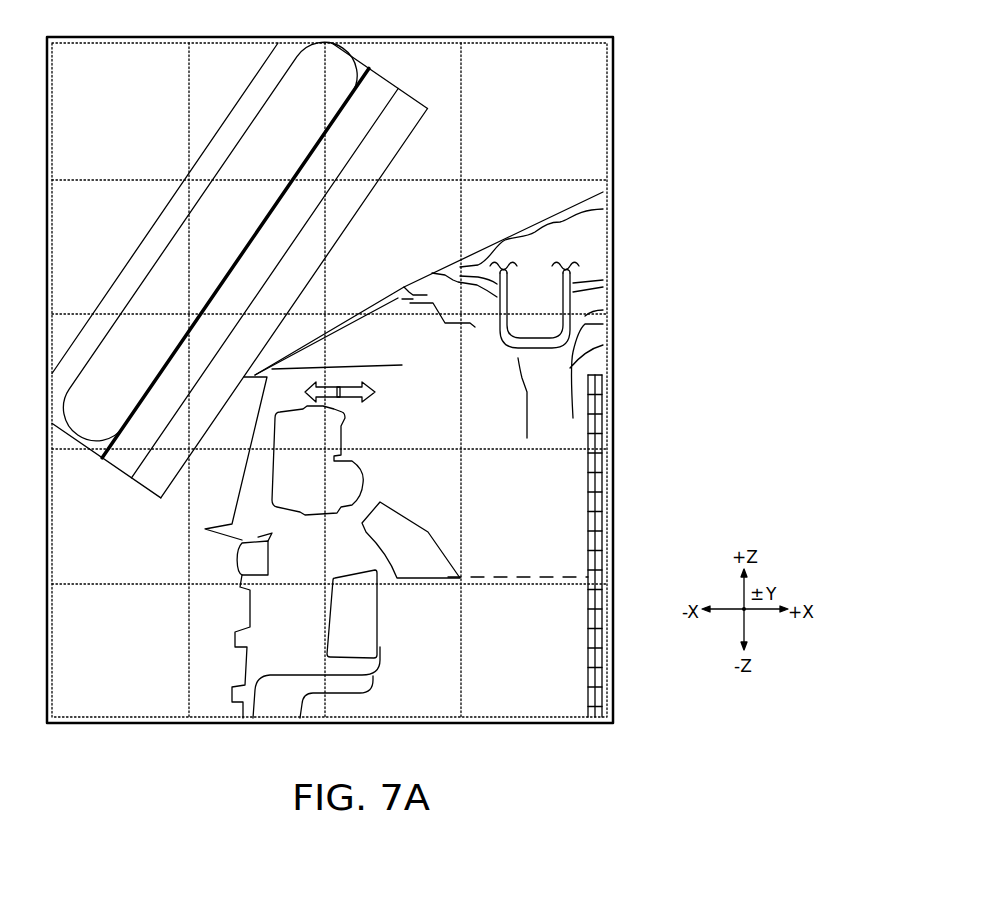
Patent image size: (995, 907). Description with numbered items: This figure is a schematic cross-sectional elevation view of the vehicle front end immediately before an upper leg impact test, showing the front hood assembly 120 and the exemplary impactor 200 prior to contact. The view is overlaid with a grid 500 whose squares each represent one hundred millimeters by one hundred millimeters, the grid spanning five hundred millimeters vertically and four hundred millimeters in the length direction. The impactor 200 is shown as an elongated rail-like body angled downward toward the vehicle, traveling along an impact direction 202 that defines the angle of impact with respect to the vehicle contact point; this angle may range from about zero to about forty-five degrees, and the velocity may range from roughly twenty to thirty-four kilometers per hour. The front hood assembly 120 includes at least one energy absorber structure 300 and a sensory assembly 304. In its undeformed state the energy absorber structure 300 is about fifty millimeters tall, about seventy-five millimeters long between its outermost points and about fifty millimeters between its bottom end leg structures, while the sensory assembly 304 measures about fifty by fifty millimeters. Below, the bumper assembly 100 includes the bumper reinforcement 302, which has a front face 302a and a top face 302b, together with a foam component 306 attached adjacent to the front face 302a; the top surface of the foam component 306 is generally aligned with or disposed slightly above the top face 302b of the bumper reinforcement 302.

The grid 500 is at (643, 116).
The bumper assembly 100 is at (185, 574).
The front hood assembly 120 is at (562, 175).
The impactor 200 is at (361, 56).
The impact direction 202 is at (141, 160).
The energy absorber structure 300 is at (360, 546).
The bumper reinforcement 302 is at (410, 590).
The front face 302a is at (382, 615).
The top face 302b is at (536, 575).
The sensory assembly 304 is at (258, 493).
The foam component 306 is at (340, 643).